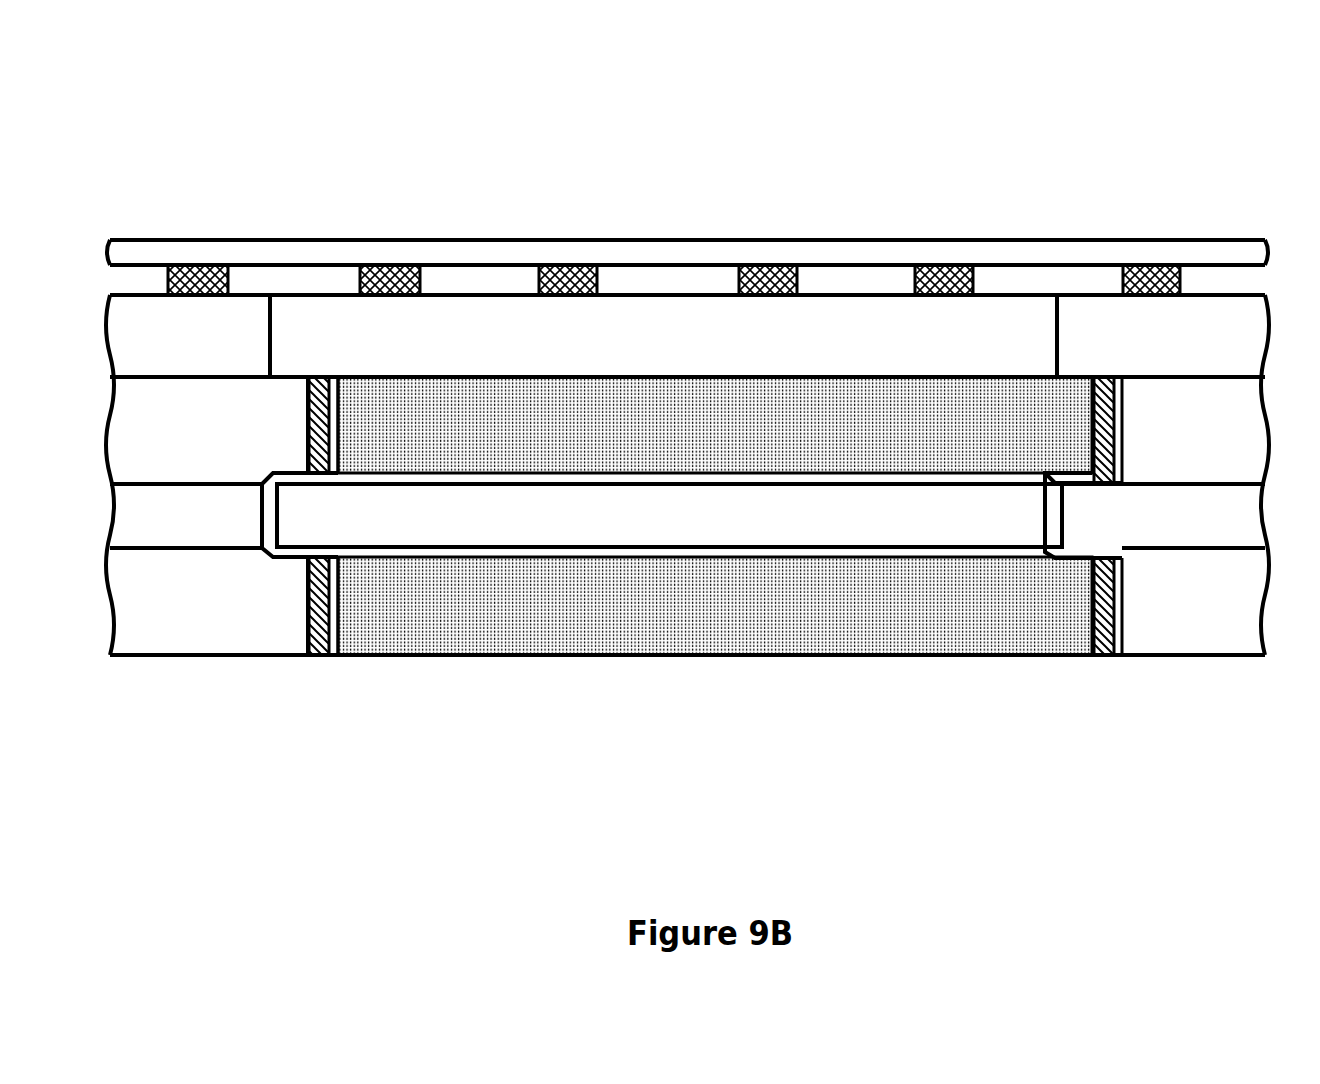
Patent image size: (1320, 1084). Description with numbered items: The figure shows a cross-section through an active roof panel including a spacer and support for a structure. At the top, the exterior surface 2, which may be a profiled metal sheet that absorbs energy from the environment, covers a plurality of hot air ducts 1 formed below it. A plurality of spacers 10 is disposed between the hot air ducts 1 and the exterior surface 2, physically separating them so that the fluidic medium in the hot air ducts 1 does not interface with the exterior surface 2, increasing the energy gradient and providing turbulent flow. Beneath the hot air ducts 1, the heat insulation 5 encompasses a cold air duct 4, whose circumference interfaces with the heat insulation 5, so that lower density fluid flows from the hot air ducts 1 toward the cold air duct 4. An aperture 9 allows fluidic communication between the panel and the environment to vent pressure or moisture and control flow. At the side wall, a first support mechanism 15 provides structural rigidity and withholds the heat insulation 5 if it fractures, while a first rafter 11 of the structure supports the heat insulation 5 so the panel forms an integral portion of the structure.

The hot air duct 1 is at (1213, 294).
The exterior surface 2 is at (235, 238).
The cold air duct 4 is at (1173, 545).
The heat insulation 5 is at (650, 376).
The aperture 9 is at (275, 557).
The spacer 10 is at (556, 264).
The first rafter 11 is at (320, 656).
The first support mechanism 15 is at (320, 376).